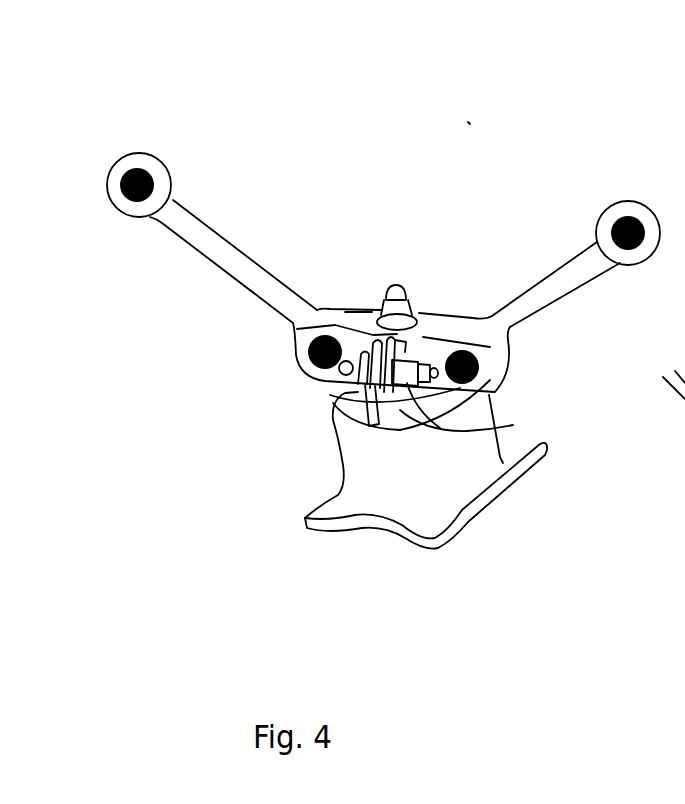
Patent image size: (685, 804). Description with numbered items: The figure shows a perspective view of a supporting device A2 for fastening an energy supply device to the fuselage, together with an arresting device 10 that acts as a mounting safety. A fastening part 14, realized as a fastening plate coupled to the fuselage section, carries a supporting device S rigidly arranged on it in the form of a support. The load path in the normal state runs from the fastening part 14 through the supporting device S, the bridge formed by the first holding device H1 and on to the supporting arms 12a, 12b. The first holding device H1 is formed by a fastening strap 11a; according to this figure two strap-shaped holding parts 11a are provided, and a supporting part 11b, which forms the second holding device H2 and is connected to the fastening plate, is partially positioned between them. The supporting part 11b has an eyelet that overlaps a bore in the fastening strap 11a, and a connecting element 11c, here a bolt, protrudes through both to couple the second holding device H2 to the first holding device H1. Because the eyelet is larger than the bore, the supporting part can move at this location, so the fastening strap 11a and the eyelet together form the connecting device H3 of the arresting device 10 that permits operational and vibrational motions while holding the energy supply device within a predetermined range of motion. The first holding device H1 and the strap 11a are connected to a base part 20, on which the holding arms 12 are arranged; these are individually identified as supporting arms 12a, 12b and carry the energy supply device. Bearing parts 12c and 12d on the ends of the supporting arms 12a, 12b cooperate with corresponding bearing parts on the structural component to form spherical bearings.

The arresting device 10 is at (237, 418).
The holding arms 12 is at (372, 202).
The supporting arm 12a is at (240, 250).
The supporting arm 12b is at (577, 268).
The bearing part 12c is at (137, 203).
The bearing part 12d is at (623, 217).
The base part 20 is at (370, 310).
The first holding device H1 is at (355, 310).
The second holding device H2 is at (345, 412).
The connecting device H3 is at (318, 390).
The fastening strap 11a is at (396, 362).
The supporting part 11b is at (367, 382).
The connecting element 11c is at (410, 382).
The supporting device S is at (465, 411).
The fastening part 14 is at (448, 531).
The supporting device A2 is at (473, 114).